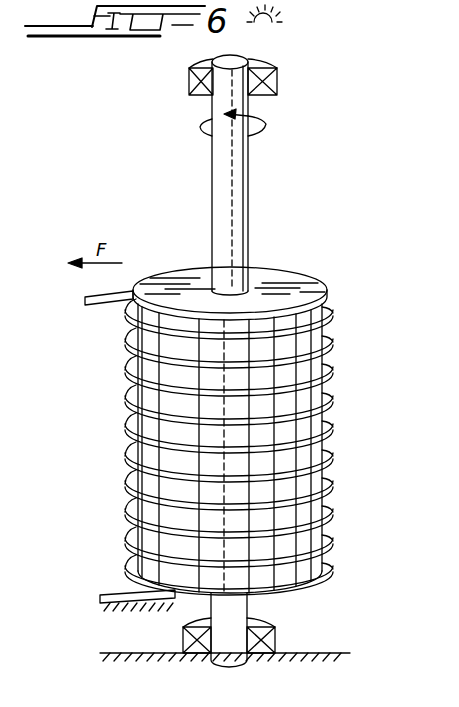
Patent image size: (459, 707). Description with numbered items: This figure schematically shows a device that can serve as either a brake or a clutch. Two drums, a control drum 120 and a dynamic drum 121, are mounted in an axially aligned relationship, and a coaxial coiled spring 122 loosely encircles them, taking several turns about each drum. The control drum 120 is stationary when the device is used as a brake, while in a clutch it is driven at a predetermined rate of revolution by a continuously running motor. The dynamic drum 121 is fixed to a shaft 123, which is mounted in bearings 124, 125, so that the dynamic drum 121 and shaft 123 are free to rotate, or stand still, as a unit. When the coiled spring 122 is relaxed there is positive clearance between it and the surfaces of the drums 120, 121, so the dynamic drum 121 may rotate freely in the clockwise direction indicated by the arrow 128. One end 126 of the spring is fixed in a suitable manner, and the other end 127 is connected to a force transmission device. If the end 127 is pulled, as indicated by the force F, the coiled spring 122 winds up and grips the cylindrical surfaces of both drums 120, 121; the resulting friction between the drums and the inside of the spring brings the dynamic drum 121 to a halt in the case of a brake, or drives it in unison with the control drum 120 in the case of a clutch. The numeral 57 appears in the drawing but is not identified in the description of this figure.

The sun (radiant heat source) 57 is at (282, 16).
The control drum 120 is at (310, 478).
The dynamic drum 121 is at (315, 360).
The coiled spring 122 is at (322, 304).
The shaft 123 is at (229, 222).
The bearing 124 is at (278, 77).
The bearing 125 is at (272, 636).
The spring end 126 is at (123, 592).
The spring end 127 is at (101, 307).
The arrow 128 is at (267, 123).